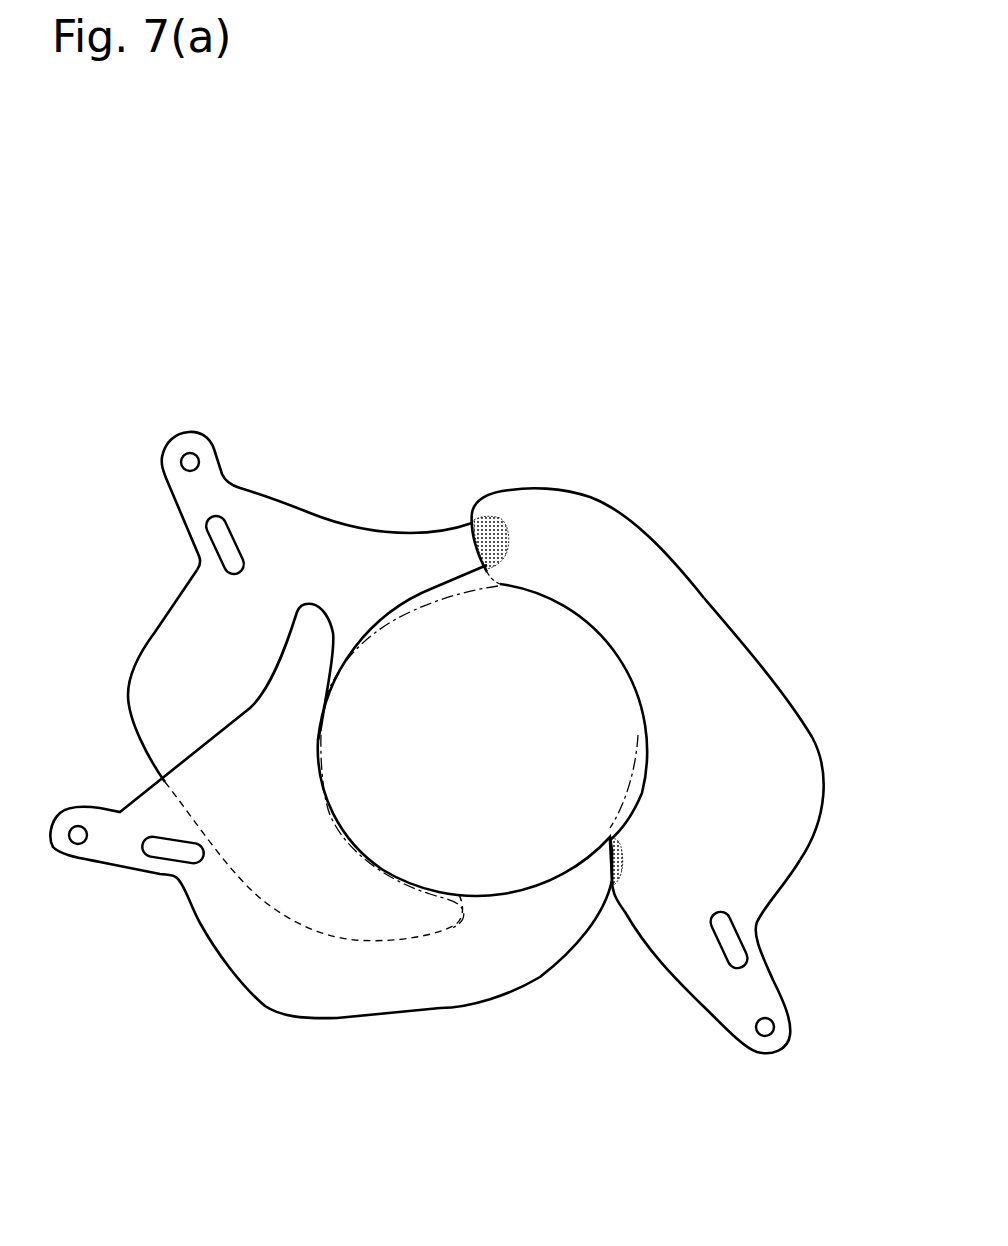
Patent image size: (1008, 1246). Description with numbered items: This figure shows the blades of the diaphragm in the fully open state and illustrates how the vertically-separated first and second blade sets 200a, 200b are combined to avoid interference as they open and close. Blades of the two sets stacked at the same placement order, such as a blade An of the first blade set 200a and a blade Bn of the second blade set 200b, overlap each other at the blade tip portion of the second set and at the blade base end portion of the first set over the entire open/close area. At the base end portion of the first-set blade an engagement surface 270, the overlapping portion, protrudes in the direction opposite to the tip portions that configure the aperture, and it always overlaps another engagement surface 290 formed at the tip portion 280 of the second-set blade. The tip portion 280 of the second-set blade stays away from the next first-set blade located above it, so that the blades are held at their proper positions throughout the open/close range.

The first blade set 200a is at (271, 498).
The second blade set 200b is at (763, 668).
The engagement surface 270 is at (507, 537).
The engagement surface 290 is at (491, 542).
The tip portion 280 is at (475, 507).
The blade An an is at (165, 663).
The blade Bn bn is at (810, 763).